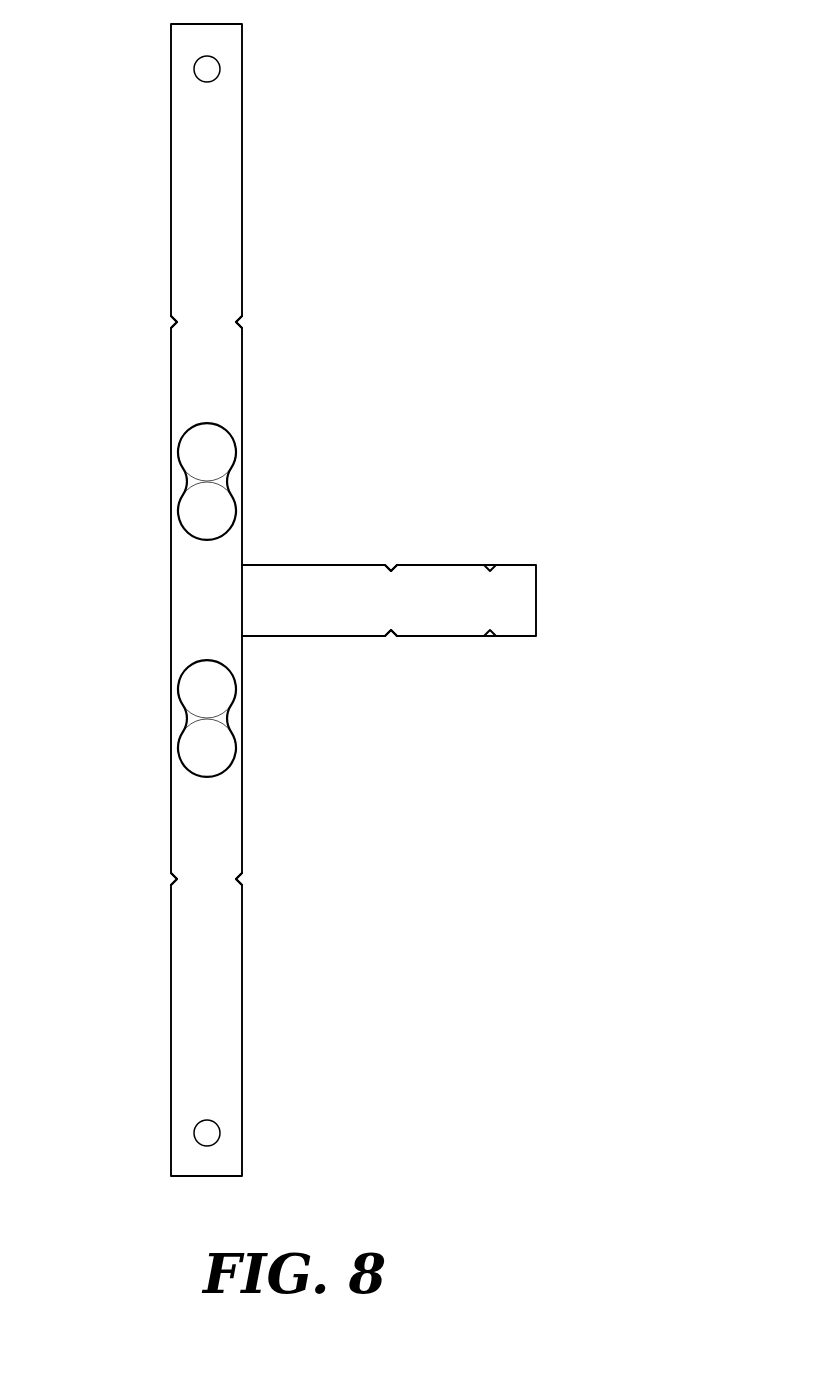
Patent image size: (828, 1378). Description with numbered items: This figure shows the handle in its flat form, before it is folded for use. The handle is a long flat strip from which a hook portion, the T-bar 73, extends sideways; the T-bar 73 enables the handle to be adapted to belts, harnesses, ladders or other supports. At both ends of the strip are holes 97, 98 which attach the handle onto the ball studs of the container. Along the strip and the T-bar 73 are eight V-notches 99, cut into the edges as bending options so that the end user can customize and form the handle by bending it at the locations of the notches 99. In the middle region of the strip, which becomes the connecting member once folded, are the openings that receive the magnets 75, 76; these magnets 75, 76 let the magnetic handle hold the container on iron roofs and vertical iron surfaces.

The T-bar 73 is at (575, 520).
The magnet 75 is at (187, 703).
The magnet 76 is at (187, 466).
The hole 97 is at (195, 1130).
The hole 98 is at (195, 68).
The V-notch 99 is at (171, 322).